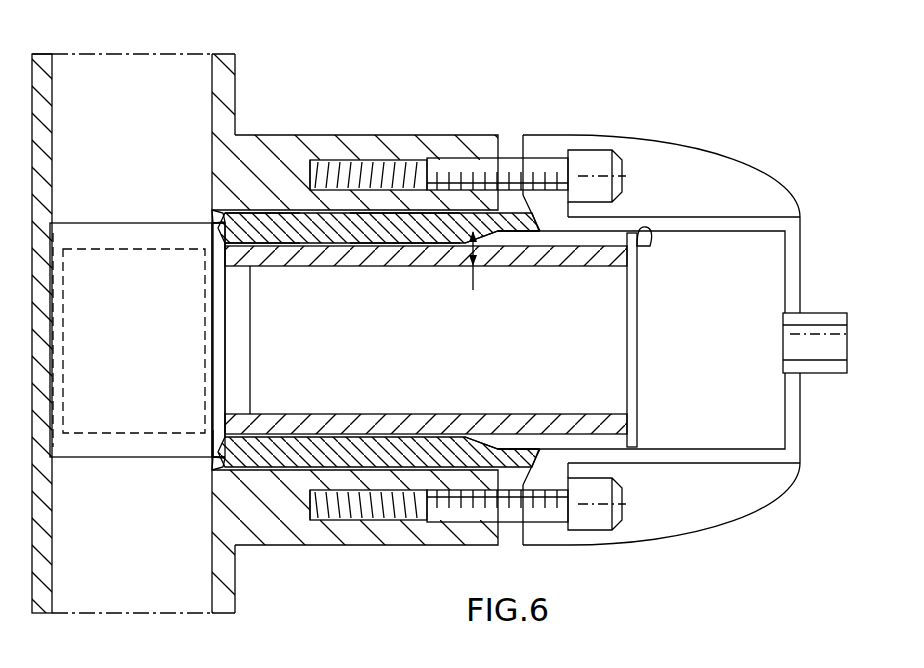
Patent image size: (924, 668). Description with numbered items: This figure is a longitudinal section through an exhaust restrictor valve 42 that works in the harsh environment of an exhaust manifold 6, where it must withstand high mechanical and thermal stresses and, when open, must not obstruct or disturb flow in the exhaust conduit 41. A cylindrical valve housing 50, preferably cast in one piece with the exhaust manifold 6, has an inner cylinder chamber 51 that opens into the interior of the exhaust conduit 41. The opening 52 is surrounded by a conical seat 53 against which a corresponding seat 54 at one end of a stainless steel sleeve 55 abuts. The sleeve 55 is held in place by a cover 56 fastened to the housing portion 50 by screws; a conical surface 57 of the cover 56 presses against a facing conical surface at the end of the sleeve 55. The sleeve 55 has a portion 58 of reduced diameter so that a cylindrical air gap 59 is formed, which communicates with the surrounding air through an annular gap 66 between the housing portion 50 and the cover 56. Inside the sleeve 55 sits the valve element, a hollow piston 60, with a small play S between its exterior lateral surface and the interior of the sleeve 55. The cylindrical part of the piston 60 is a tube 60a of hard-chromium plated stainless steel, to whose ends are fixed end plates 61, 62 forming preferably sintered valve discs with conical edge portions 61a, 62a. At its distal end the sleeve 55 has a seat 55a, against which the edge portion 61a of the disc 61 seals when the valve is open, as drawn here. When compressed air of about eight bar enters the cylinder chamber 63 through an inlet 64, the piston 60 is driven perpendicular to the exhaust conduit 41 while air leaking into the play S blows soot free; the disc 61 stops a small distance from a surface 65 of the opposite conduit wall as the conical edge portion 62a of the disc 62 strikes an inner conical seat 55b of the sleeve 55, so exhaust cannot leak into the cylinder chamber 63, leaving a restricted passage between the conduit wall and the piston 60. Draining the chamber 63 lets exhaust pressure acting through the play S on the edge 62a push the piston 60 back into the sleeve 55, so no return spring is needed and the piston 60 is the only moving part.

The exhaust manifold 6 is at (241, 96).
The exhaust conduit 41 is at (230, 69).
The valve 42 is at (353, 556).
The cylindrical valve housing 50 is at (354, 138).
The inner cylinder chamber 51 is at (300, 213).
The opening 52 is at (214, 456).
The conical seat 53 is at (213, 461).
The seat 54 is at (222, 215).
The sleeve 55 is at (380, 233).
The seat 55a is at (225, 428).
The inner conical seat 55b is at (497, 428).
The cover 56 is at (650, 157).
The conical surface 57 is at (538, 229).
The portion of reduced diameter 58 is at (352, 209).
The cylindrical air gap 59 is at (443, 216).
The hollow piston 60 is at (658, 289).
The tube 60a is at (383, 414).
The end plate 61 is at (213, 308).
The conical edge portion 61a is at (209, 244).
The end plate 62 is at (640, 333).
The conical edge portion 62a is at (637, 233).
The cylinder chamber 63 is at (722, 381).
The inlet 64 is at (812, 373).
The surface 65 is at (52, 282).
The annular gap 66 is at (513, 143).
The play S is at (484, 264).